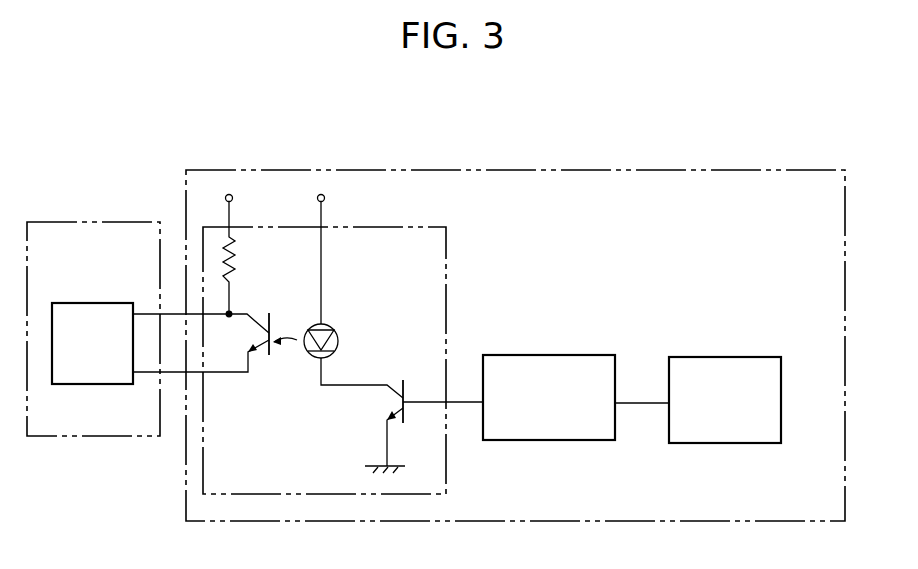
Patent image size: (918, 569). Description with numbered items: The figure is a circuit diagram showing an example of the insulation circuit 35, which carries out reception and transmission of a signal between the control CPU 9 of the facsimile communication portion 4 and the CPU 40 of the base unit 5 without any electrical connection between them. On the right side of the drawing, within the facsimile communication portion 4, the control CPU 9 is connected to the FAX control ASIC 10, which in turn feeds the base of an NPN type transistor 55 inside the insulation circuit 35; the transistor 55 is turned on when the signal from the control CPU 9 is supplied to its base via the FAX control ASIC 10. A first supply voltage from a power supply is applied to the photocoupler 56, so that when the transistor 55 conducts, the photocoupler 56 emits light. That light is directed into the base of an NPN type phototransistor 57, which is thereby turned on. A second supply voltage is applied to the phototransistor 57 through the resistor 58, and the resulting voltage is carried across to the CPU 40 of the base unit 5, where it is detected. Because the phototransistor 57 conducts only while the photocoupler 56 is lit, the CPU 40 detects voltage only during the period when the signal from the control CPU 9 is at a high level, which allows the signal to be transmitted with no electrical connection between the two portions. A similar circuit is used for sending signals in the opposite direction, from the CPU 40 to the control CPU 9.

The facsimile communication portion 4 is at (627, 170).
The base unit 5 is at (125, 222).
The CPU 40 is at (120, 302).
The insulation circuit 35 is at (449, 300).
The resistor 58 is at (237, 262).
The NPN type phototransistor 57 is at (257, 351).
The photocoupler 56 is at (339, 348).
The NPN type transistor 55 is at (405, 388).
The FAX control ASIC 10 is at (556, 355).
The control CPU 9 is at (723, 357).